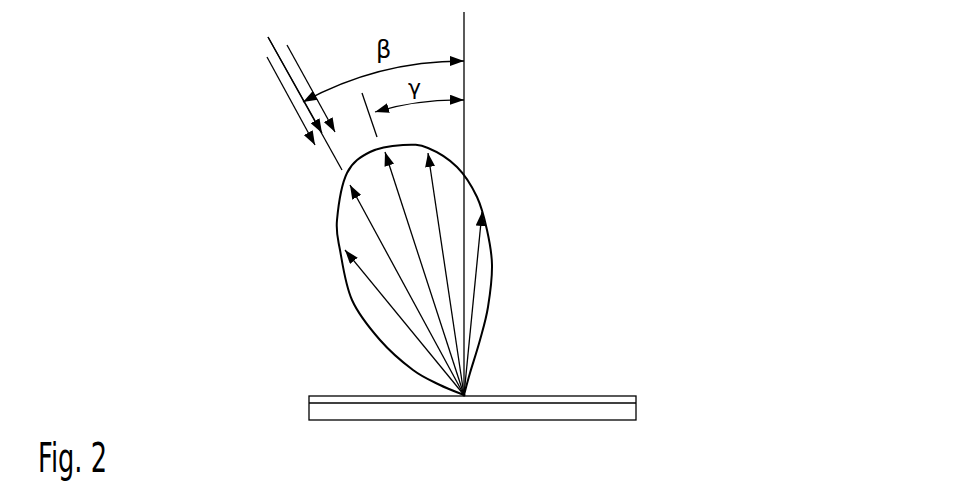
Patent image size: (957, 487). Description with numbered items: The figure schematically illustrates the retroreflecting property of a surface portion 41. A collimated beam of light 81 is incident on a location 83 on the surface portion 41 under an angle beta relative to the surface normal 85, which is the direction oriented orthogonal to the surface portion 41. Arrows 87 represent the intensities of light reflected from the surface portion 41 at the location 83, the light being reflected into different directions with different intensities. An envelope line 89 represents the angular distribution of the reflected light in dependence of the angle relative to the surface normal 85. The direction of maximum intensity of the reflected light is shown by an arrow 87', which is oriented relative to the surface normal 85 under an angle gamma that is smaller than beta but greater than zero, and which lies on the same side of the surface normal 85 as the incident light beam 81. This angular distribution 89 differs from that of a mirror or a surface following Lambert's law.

The collimated beam of light 81 is at (298, 55).
The surface normal 85 is at (464, 82).
The envelope line 89 is at (480, 195).
The arrows representing reflected light intensities 87 is at (412, 274).
The direction of maximum intensity arrow 87' is at (424, 255).
The location on the surface 83 is at (468, 392).
The surface portion 41 is at (608, 395).